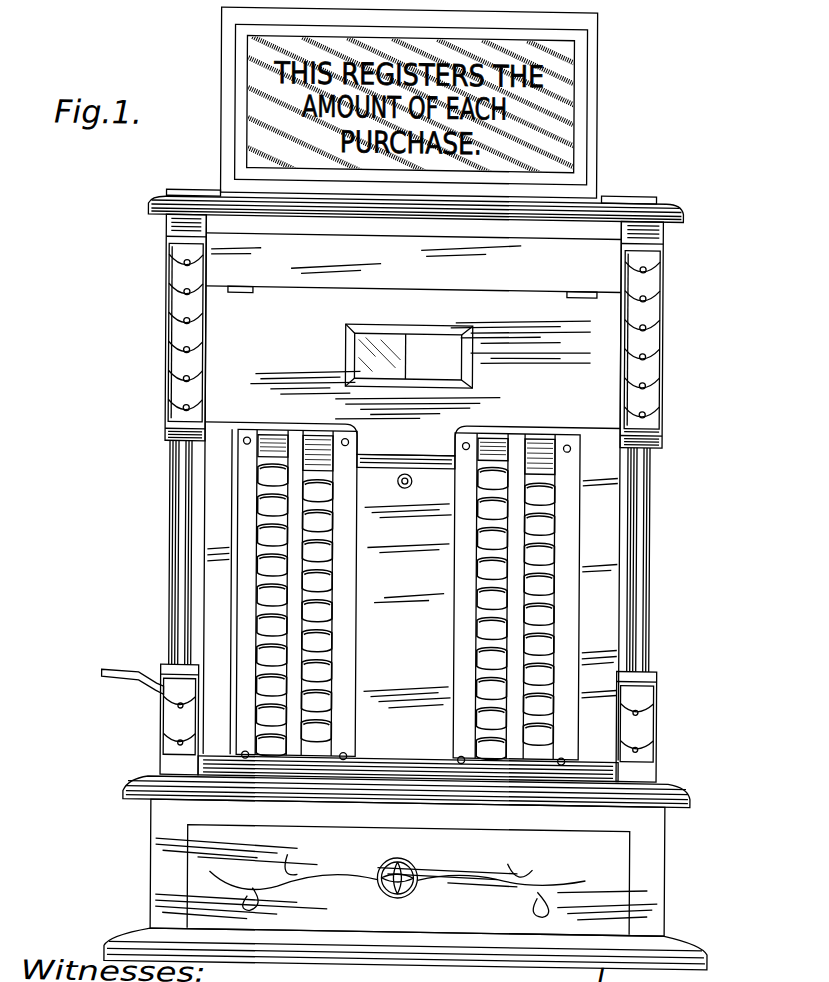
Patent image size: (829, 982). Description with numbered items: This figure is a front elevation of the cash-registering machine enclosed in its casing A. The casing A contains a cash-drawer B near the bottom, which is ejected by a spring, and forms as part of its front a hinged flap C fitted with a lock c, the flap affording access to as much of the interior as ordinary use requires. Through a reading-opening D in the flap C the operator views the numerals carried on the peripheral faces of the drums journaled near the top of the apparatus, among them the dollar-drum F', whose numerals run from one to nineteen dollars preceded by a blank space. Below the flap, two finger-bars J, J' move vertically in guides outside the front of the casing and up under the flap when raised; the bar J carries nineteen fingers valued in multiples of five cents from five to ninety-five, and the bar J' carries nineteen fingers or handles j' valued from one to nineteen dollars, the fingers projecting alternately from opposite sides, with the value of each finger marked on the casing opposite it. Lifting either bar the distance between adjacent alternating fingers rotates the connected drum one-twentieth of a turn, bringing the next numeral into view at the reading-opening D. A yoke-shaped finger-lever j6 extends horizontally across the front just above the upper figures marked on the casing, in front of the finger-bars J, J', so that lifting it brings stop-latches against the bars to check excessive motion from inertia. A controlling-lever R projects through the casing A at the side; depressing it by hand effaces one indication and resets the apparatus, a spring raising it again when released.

The casing A is at (650, 244).
The cash-drawer B is at (406, 884).
The hinged flap C is at (413, 352).
The reading-opening D is at (470, 332).
The dollar-drum F' is at (410, 372).
The controlling-lever R is at (125, 676).
The lock c is at (411, 488).
The finger-lever j6 is at (625, 433).
The finger-bar J is at (481, 599).
The finger-bar J' is at (373, 595).
The fingers or handles j' is at (411, 596).